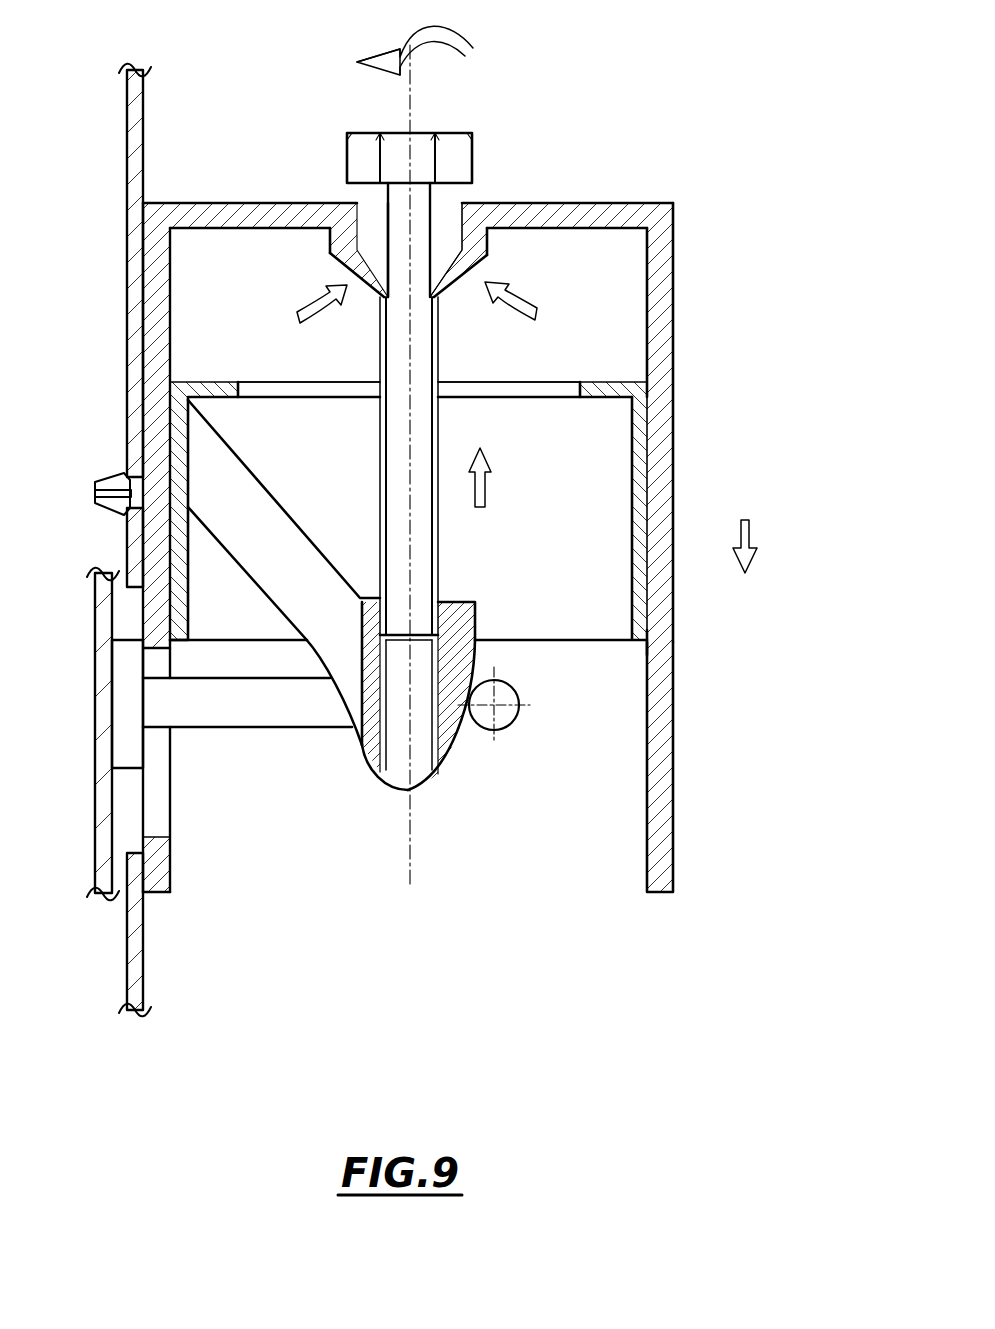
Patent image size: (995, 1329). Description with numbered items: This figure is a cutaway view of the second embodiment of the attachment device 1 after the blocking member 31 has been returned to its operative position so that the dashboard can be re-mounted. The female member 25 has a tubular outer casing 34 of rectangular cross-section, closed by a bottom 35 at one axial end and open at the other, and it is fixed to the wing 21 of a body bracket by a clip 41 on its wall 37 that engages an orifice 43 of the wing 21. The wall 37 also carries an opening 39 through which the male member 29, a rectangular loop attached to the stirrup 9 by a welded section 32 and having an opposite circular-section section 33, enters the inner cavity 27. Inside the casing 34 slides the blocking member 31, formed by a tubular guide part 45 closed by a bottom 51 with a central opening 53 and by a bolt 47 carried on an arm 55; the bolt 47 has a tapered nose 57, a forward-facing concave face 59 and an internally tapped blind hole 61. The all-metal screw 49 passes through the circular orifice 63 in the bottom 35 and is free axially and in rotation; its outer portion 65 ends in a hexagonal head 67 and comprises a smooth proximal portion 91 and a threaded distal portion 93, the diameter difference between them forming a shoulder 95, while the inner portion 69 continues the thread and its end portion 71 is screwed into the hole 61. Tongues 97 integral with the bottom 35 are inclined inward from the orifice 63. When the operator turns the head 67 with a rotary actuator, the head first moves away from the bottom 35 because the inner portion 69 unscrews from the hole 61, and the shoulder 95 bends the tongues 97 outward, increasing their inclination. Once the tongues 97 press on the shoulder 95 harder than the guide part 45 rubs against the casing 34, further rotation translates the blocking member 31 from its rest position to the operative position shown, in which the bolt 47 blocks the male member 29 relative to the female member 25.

The attachment device 1 is at (795, 868).
The stirrup 9 is at (103, 812).
The wing 21 is at (133, 177).
The female member 25 is at (655, 773).
The inner cavity 27 is at (640, 684).
The male member 29 is at (118, 742).
The blocking member 31 is at (641, 459).
The section 32 is at (125, 677).
The section 33 is at (502, 717).
The tubular outer casing 34 is at (660, 535).
The bottom 35 is at (593, 210).
The wall 37 is at (160, 403).
The opening 39 is at (157, 837).
The clip 41 is at (112, 479).
The orifice 43 is at (118, 504).
The tubular part 45 is at (637, 503).
The bolt 47 is at (460, 623).
The screw 49 is at (513, 94).
The bottom 51 is at (597, 388).
The central opening 53 is at (240, 387).
The arm 55 is at (258, 537).
The tapered nose 57 is at (410, 793).
The concave face 59 is at (463, 740).
The internally tapped blind hole 61 is at (390, 718).
The circular orifice 63 is at (448, 200).
The outer portion 65 is at (400, 222).
The hexagonal head 67 is at (428, 145).
The inner portion 69 is at (413, 517).
The end portion 71 is at (410, 618).
The proximal portion 91 is at (397, 237).
The distal portion 93 is at (387, 366).
The shoulder 95 is at (372, 296).
The tongues 97 is at (353, 268).